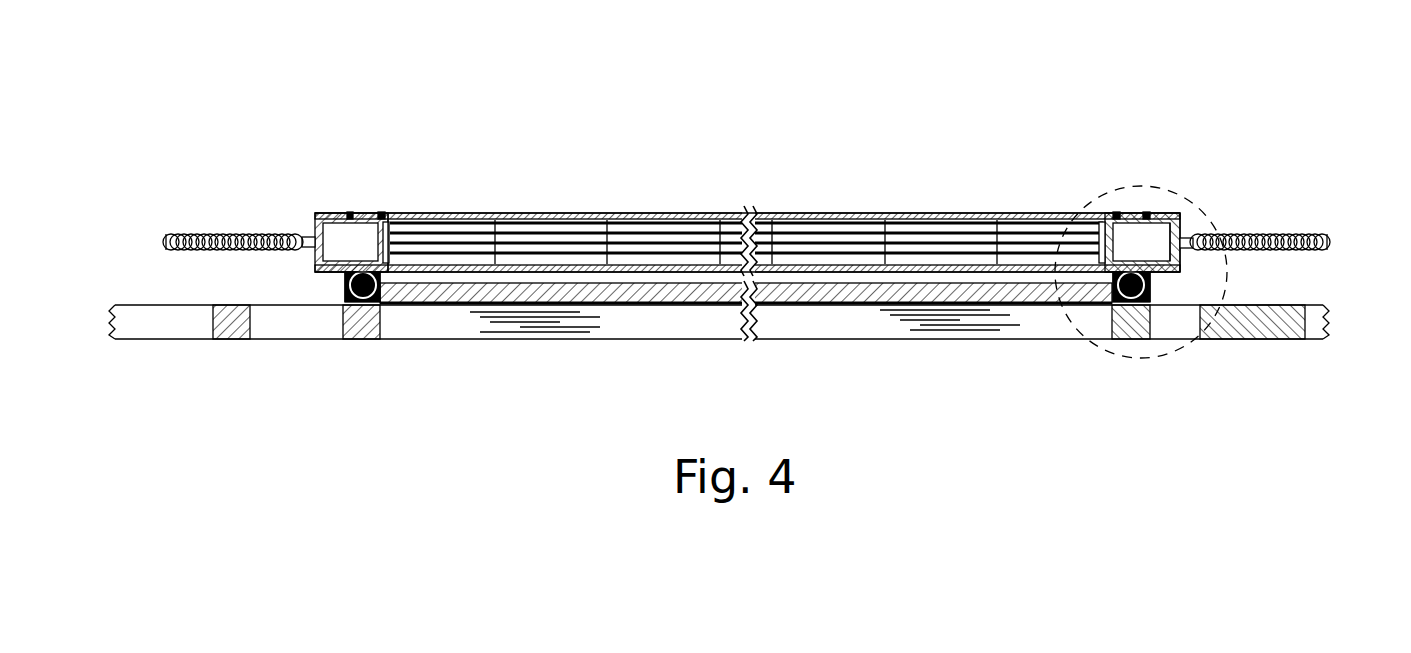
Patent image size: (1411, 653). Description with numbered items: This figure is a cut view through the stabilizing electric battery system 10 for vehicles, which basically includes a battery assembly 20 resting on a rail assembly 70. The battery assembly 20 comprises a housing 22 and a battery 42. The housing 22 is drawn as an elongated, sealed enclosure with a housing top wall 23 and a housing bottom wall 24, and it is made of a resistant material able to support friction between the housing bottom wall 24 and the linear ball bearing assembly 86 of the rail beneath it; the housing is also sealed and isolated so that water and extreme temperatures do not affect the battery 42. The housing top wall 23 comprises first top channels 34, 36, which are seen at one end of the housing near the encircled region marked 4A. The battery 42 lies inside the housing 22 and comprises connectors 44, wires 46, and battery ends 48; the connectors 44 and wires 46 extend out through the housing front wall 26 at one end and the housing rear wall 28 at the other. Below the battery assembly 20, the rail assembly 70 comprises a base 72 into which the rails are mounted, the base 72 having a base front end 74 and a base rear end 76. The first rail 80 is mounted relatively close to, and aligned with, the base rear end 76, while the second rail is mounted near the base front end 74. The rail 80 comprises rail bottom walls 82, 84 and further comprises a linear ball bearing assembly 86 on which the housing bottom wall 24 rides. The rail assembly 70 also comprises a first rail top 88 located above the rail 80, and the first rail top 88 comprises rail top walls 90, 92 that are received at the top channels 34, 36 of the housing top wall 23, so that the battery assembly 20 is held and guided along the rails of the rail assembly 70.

The stabilizing electric battery system 10 is at (183, 93).
The battery assembly 20 is at (747, 166).
The housing 22 is at (570, 211).
The housing top wall 23 is at (683, 213).
The housing bottom wall 24 is at (915, 268).
The housing front wall 26 is at (346, 140).
The housing rear wall 28 is at (1211, 153).
The first top channel 34 is at (1105, 214).
The first top channel 36 is at (1176, 213).
The battery 42 is at (925, 232).
The connectors 44 is at (300, 238).
The wires 46 is at (204, 203).
The battery ends 48 is at (1182, 218).
The detail view region 4A is at (1162, 213).
The rail assembly 70 is at (337, 295).
The base 72 is at (672, 300).
The base front end 74 is at (719, 335).
The base rear end 76 is at (1156, 301).
The first rail 80 is at (1152, 283).
The rail bottom wall 82 is at (1171, 336).
The rail bottom wall 84 is at (1183, 270).
The linear ball bearing assembly 86 is at (1113, 296).
The first rail top 88 is at (1130, 213).
The rail top wall 90 is at (1110, 213).
The rail top wall 92 is at (1146, 213).